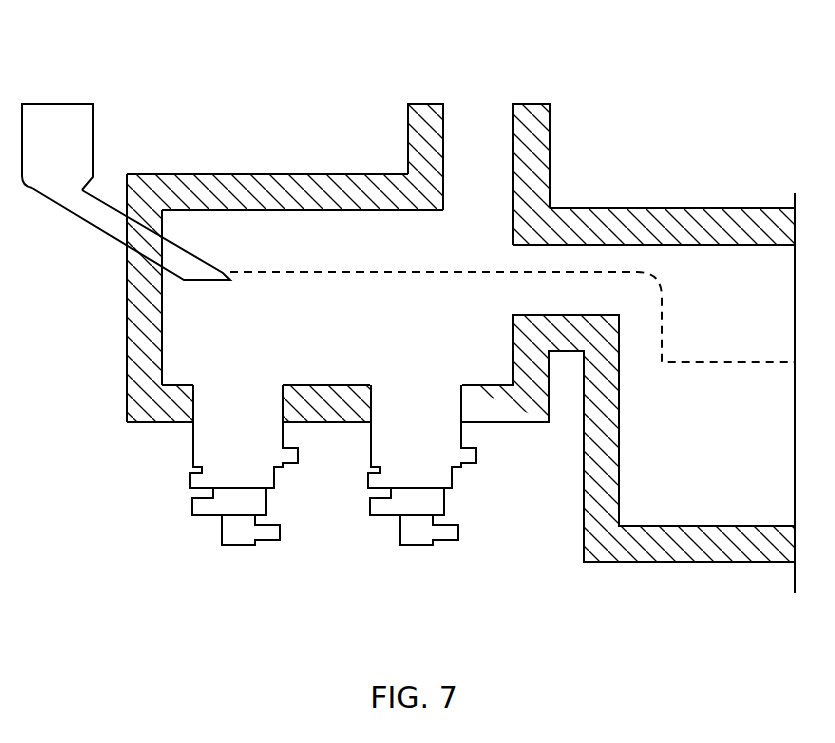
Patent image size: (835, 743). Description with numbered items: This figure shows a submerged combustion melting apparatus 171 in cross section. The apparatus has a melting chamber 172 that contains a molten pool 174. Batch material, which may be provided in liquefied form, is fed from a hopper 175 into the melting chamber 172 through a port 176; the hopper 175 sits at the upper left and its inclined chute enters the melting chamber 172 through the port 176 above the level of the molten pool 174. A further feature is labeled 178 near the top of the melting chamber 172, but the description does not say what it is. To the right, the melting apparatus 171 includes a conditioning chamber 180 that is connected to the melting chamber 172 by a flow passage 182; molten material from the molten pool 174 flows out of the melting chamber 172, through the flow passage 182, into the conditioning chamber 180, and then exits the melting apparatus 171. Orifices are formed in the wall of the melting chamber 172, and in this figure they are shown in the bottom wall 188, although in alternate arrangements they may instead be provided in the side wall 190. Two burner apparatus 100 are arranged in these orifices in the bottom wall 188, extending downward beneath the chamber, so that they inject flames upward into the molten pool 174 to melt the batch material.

The burner apparatus 100 is at (238, 530).
The submerged combustion melting apparatus 171 is at (314, 174).
The melting chamber 172 is at (128, 378).
The molten pool 174 is at (320, 331).
The hopper 175 is at (77, 128).
The port 176 is at (142, 258).
The wall projection / opening 178 is at (443, 190).
The conditioning chamber 180 is at (722, 208).
The flow passage 182 is at (573, 257).
The bottom wall 188 is at (326, 407).
The side wall 190 is at (138, 320).